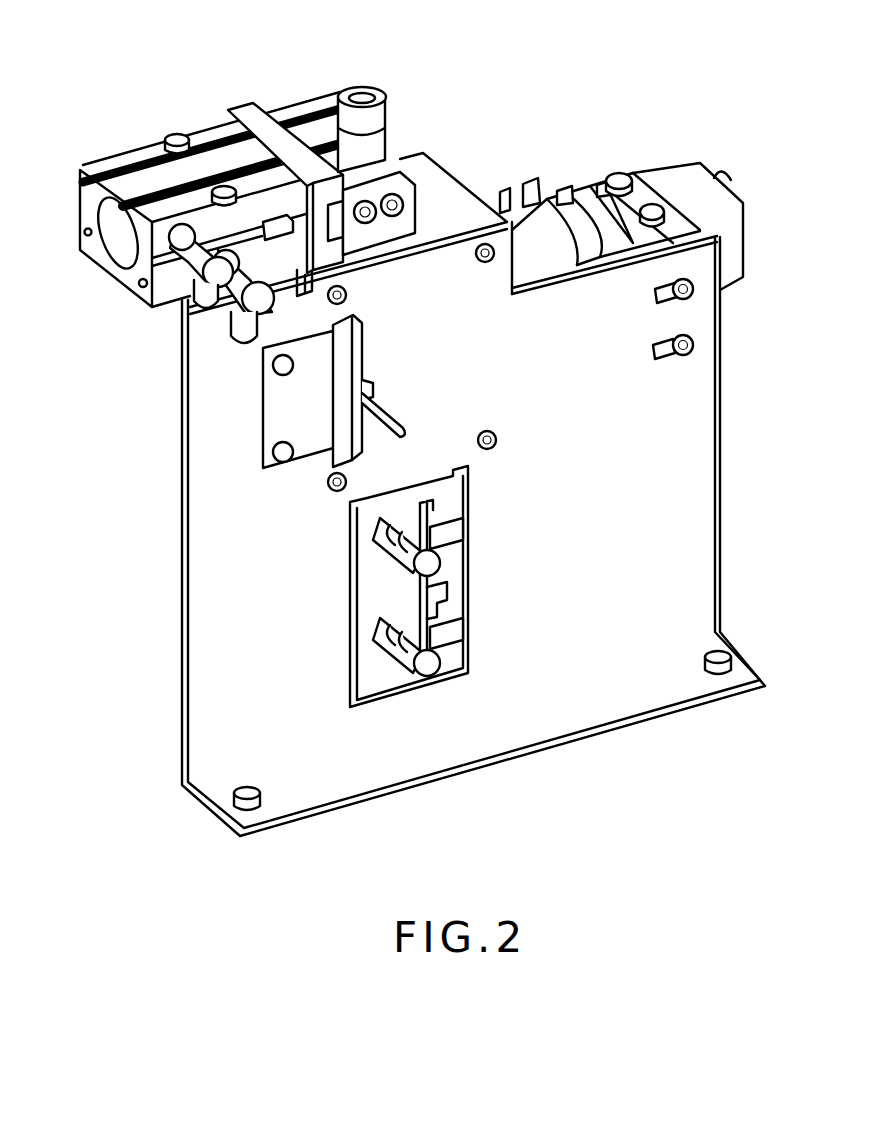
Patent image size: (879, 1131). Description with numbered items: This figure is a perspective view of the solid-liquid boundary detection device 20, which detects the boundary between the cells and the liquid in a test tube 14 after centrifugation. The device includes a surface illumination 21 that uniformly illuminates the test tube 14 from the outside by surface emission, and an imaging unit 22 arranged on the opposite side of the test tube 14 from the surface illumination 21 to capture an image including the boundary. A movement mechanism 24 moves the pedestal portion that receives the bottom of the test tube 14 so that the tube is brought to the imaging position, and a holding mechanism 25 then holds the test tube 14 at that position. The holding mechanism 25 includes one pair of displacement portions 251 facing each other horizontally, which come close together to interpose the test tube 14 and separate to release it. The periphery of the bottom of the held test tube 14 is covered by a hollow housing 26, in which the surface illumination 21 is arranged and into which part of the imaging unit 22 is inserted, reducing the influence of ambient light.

The solid-liquid boundary detection device 20 is at (696, 92).
The surface illumination 21 is at (357, 330).
The imaging unit 22 is at (538, 223).
The movement mechanism 24 is at (367, 643).
The holding mechanism 25 is at (197, 125).
The displacement portions 251 is at (325, 120).
The housing 26 is at (463, 200).
The test tube 14 is at (383, 150).